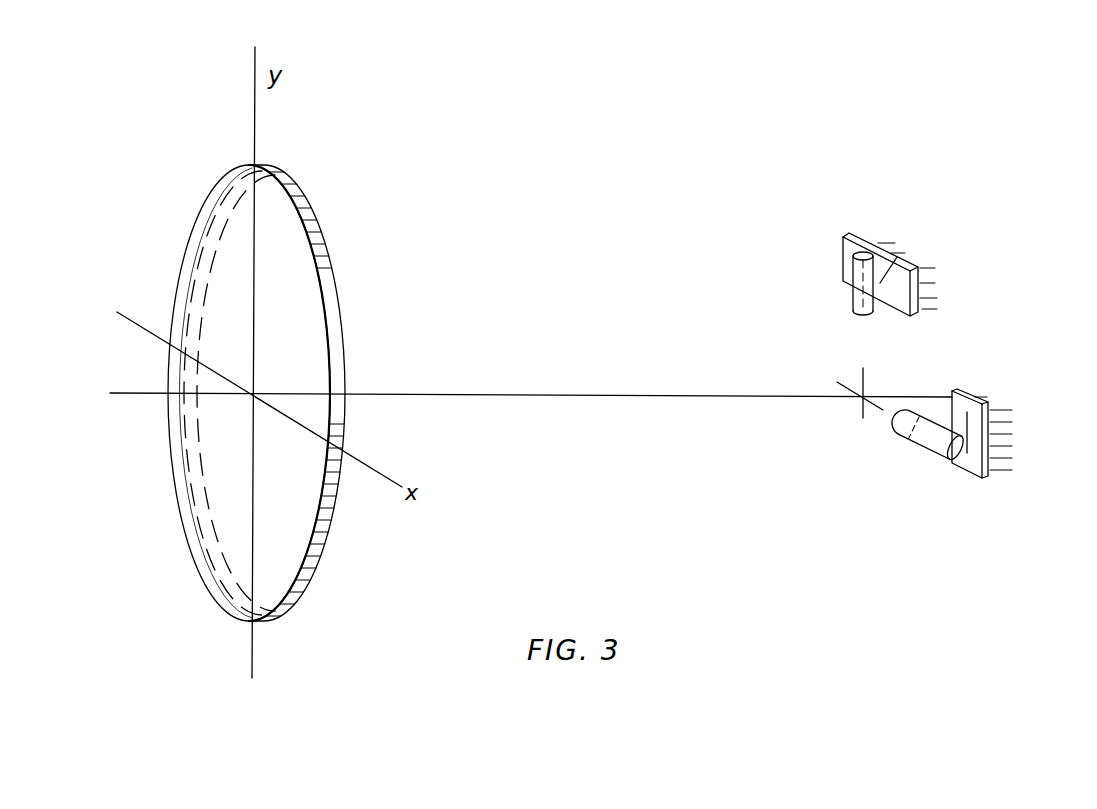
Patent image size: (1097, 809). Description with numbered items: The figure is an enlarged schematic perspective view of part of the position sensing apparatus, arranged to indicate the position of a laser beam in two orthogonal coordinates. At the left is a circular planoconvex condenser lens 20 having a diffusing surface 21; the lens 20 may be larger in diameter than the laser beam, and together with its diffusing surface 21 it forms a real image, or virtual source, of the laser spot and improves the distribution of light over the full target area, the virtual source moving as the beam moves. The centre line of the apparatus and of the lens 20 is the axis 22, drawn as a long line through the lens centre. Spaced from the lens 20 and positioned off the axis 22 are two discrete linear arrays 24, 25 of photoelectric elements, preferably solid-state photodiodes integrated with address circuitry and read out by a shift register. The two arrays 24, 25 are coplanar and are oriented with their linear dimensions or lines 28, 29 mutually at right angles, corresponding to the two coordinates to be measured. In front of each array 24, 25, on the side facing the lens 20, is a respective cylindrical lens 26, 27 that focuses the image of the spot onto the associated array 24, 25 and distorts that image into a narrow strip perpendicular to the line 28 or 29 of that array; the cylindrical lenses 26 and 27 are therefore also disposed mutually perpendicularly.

The circular planoconvex condenser lens 20 is at (249, 393).
The diffusing surface 21 is at (345, 352).
The axis 22 is at (570, 397).
The linear array 24 is at (925, 261).
The linear array 25 is at (988, 472).
The cylindrical lens 26 is at (870, 306).
The cylindrical lens 27 is at (927, 432).
The line 28 is at (897, 257).
The line 29 is at (967, 420).